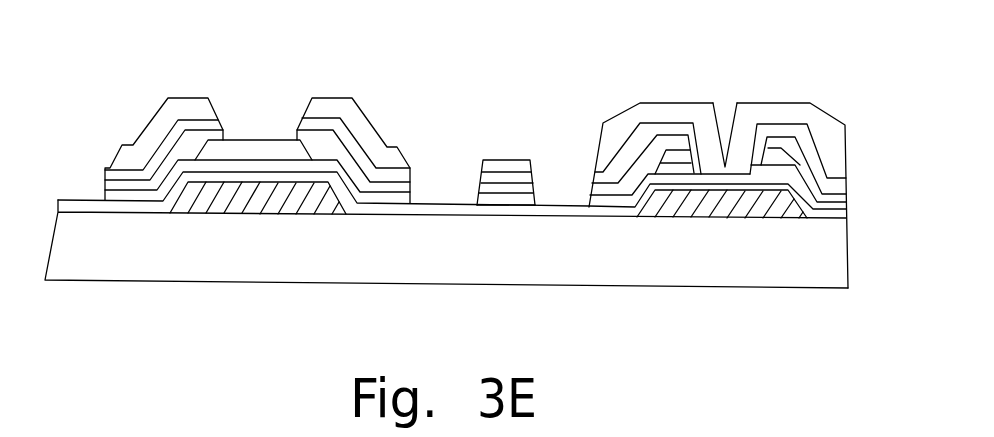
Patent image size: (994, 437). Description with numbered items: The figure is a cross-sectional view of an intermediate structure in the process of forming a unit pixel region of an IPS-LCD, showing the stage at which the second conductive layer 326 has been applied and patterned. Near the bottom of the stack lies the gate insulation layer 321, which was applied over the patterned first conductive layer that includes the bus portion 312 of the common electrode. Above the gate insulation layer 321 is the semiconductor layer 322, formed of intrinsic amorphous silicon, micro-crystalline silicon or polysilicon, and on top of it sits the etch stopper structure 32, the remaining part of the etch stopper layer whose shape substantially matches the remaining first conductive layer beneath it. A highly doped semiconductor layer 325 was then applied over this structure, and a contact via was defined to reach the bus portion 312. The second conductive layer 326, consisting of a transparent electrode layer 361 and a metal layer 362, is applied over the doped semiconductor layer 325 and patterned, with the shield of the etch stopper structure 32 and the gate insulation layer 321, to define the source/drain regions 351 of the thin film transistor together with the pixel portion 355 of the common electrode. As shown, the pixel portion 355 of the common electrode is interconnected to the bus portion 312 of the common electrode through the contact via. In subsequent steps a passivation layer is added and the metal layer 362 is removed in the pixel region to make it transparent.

The second conductive layer 326 is at (133, 68).
The source/drain regions 351 is at (192, 140).
The etch stopper structure 32 is at (265, 150).
The transparent electrode layer 361 is at (112, 173).
The metal layer 362 is at (122, 158).
The pixel portion of the common electrode 355 is at (540, 173).
The semiconductor layer 322 is at (843, 210).
The gate insulation layer 321 is at (848, 213).
The highly doped semiconductor layer 325 is at (130, 183).
The bus portion of the common electrode 312 is at (725, 195).